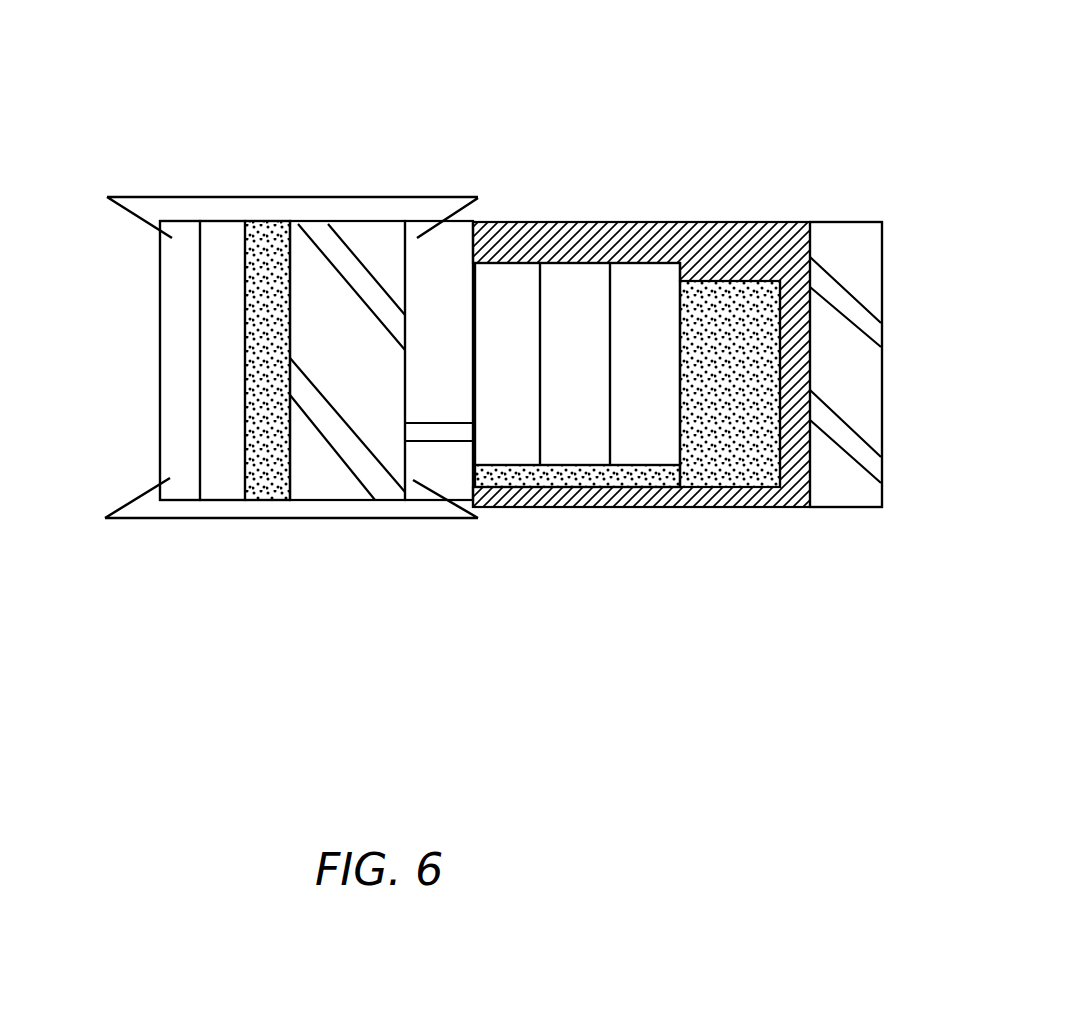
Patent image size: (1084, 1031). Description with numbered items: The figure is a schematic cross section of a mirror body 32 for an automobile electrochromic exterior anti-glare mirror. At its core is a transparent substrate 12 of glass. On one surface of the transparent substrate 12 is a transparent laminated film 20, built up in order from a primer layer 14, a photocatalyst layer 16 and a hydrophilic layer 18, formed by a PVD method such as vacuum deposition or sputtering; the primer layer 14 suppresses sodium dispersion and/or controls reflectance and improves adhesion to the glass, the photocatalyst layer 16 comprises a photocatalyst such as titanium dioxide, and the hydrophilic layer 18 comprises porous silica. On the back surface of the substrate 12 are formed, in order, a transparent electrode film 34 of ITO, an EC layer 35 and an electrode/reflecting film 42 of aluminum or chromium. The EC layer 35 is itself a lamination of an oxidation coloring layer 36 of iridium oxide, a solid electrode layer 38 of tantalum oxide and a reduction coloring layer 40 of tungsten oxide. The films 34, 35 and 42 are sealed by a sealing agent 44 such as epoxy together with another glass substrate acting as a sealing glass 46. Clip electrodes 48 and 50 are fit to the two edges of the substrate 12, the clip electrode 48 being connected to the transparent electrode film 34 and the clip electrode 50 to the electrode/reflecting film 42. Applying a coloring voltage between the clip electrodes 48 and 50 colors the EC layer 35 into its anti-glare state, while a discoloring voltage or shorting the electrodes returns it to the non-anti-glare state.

The transparent substrate 12 is at (358, 246).
The primer layer 14 is at (280, 243).
The photocatalyst layer 16 is at (231, 243).
The hydrophilic layer 18 is at (188, 248).
The transparent laminated film 20 is at (290, 542).
The mirror body 32 is at (614, 78).
The transparent electrode film 34 is at (455, 248).
The EC layer 35 is at (646, 604).
The oxidation coloring layer 36 is at (510, 450).
The solid electrode layer 38 is at (575, 450).
The reduction coloring layer 40 is at (647, 450).
The electrode/reflecting film 42 is at (718, 306).
The sealing agent 44 is at (737, 507).
The end block 46 is at (847, 257).
The clip electrode 48 is at (155, 197).
The clip electrode 50 is at (388, 520).